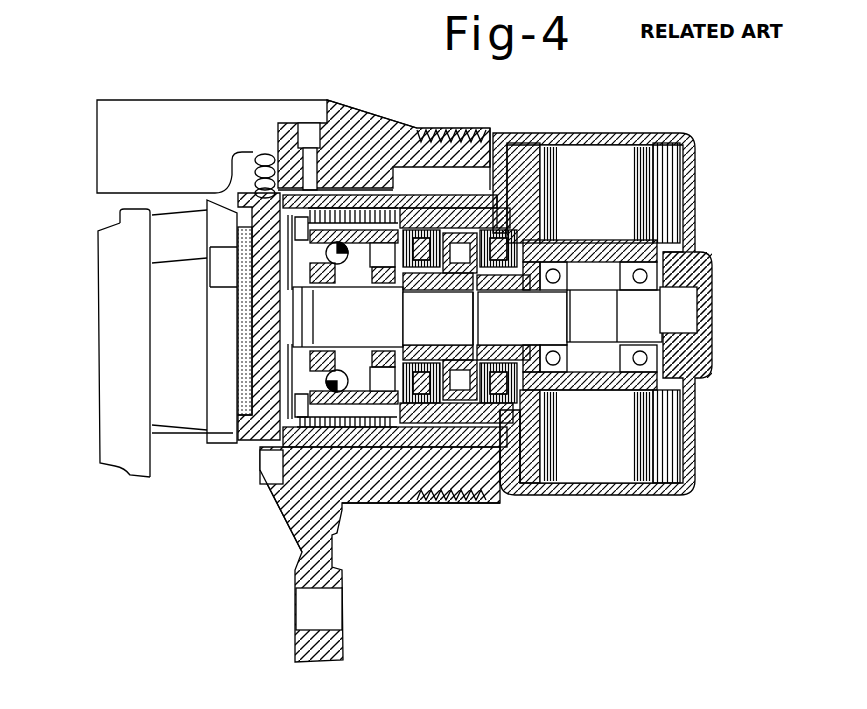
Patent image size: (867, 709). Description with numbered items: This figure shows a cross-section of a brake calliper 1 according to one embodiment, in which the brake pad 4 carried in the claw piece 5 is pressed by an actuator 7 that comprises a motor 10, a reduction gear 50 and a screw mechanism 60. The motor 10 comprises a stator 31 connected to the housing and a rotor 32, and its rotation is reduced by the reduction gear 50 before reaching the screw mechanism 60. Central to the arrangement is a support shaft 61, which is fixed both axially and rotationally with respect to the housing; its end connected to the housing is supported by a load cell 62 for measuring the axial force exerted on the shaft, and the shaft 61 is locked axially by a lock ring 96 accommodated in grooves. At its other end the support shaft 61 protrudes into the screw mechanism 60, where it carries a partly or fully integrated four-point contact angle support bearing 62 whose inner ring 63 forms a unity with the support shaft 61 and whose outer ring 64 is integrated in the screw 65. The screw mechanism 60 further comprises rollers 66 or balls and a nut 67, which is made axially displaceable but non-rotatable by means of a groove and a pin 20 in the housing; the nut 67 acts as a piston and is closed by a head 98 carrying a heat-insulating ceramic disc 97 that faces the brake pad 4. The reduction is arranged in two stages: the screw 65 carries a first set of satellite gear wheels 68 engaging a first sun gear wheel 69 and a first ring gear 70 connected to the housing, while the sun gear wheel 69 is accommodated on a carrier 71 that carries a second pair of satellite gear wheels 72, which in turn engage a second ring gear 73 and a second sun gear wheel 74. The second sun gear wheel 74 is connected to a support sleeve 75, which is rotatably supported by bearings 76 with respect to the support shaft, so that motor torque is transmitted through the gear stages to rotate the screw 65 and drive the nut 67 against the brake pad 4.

The brake calliper 1 is at (204, 85).
The brake pad 4 is at (187, 403).
The claw piece 5 is at (140, 118).
The actuator 7 is at (436, 115).
The motor 10 is at (613, 170).
The pin 20 is at (323, 185).
The stator 31 is at (648, 143).
The rotor 32 is at (640, 240).
The reduction gear 50 is at (481, 133).
The screw mechanism 60 is at (375, 178).
The support shaft 61 is at (705, 357).
The load cell / four-point contact angle support bearing 62 is at (303, 167).
The inner ring 63 is at (393, 200).
The outer ring 64 is at (338, 187).
The screw 65 is at (448, 137).
The rollers 66 is at (280, 517).
The nut 67 is at (366, 187).
The first set of satellite gear wheels 68 is at (397, 450).
The first sun gear wheel 69 is at (427, 347).
The first ring gear 70 is at (423, 452).
The carrier 71 is at (452, 473).
The second pair of satellite gear wheels 72 is at (512, 410).
The second ring gear 73 is at (481, 457).
The second sun gear wheel 74 is at (508, 343).
The support sleeve 75 is at (600, 262).
The bearings 76 is at (615, 358).
The lock ring 96 is at (695, 258).
The heat-insulating ceramic disc 97 is at (245, 365).
The head 98 is at (247, 410).